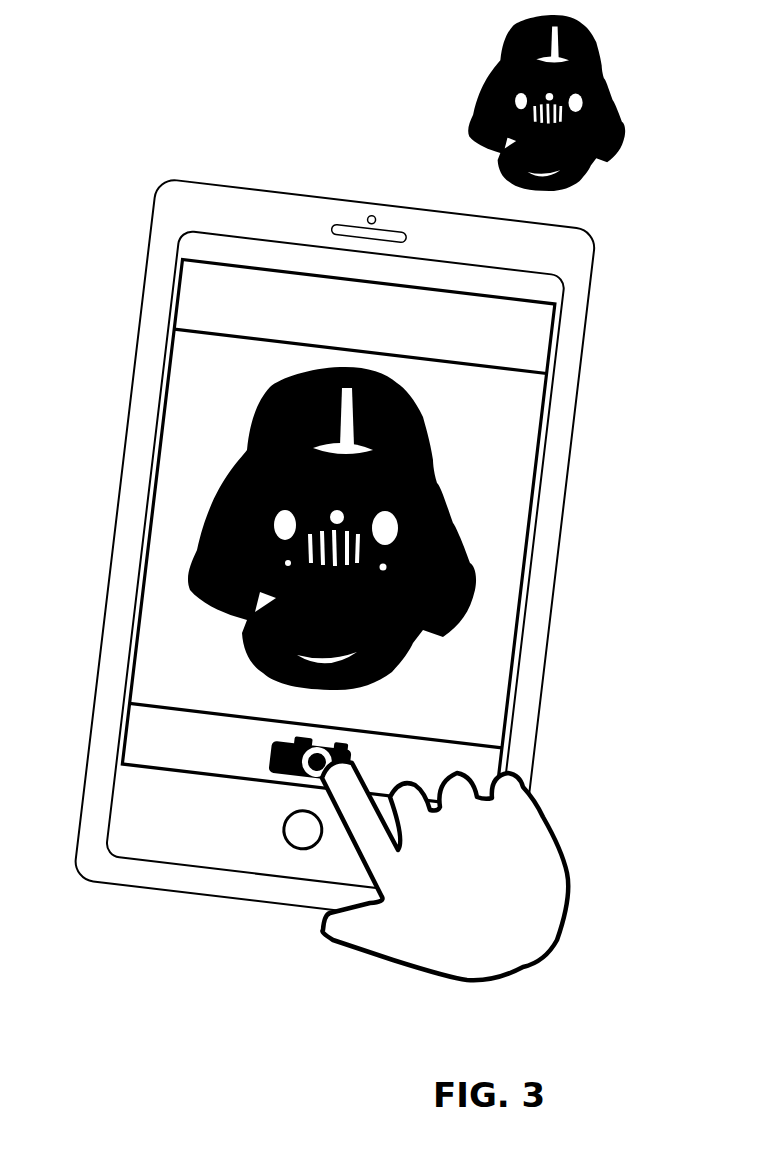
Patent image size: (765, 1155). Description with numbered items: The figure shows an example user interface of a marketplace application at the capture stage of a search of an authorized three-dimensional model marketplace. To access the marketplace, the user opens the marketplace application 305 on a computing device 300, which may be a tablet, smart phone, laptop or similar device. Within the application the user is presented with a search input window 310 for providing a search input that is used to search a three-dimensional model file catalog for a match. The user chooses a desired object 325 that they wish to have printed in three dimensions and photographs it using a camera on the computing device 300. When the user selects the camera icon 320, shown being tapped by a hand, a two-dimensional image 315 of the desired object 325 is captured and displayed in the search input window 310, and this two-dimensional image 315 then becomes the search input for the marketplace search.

The computing device 300 is at (265, 190).
The marketplace application 305 is at (177, 313).
The search input window 310 is at (537, 408).
The 2D image 315 is at (470, 587).
The camera icon 320 is at (273, 755).
The desired object 325 is at (628, 88).